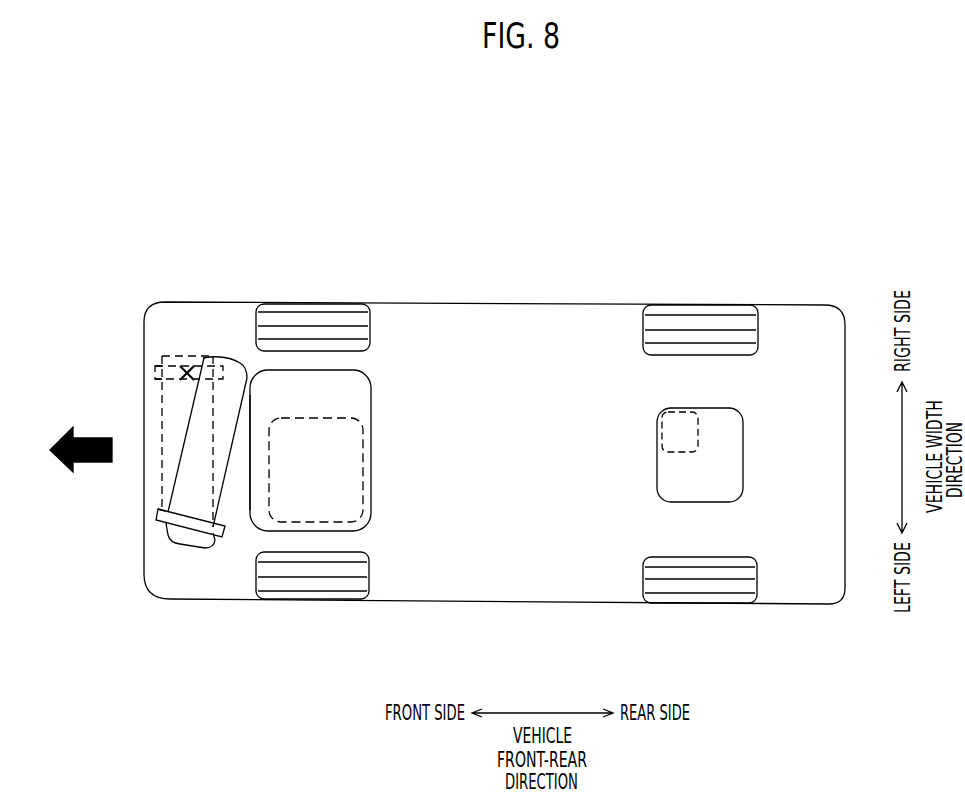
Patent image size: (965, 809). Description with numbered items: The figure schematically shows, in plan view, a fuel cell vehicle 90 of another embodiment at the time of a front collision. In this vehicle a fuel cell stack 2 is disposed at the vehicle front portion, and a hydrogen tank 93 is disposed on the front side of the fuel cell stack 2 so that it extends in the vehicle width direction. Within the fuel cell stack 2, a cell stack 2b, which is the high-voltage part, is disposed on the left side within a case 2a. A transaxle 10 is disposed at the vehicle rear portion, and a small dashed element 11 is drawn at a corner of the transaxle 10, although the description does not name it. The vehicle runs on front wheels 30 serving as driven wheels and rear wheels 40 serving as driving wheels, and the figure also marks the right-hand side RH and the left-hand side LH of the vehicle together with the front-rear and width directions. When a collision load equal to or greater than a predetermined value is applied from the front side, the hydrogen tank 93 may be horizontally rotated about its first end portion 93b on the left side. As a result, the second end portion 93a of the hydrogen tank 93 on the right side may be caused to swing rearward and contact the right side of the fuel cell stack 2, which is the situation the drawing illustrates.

The fuel cell vehicle 90 is at (510, 303).
The fuel cell stack 2 is at (257, 523).
The case 2a is at (247, 493).
The cell stack 2b is at (367, 513).
The transaxle 10 is at (737, 473).
The fuel pump 11 is at (678, 412).
The front wheels 30 is at (312, 585).
The rear wheels 40 is at (697, 593).
The hydrogen tank 93 is at (187, 427).
The second end portion 93a is at (233, 365).
The first end portion 93b is at (180, 532).
The right-hand side RH is at (153, 372).
The left-hand side LH is at (158, 515).